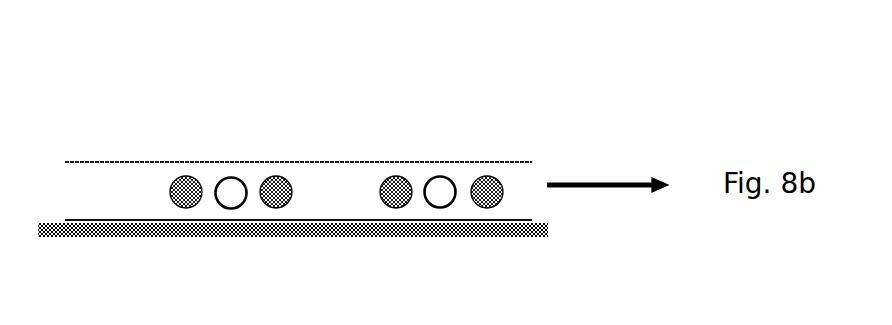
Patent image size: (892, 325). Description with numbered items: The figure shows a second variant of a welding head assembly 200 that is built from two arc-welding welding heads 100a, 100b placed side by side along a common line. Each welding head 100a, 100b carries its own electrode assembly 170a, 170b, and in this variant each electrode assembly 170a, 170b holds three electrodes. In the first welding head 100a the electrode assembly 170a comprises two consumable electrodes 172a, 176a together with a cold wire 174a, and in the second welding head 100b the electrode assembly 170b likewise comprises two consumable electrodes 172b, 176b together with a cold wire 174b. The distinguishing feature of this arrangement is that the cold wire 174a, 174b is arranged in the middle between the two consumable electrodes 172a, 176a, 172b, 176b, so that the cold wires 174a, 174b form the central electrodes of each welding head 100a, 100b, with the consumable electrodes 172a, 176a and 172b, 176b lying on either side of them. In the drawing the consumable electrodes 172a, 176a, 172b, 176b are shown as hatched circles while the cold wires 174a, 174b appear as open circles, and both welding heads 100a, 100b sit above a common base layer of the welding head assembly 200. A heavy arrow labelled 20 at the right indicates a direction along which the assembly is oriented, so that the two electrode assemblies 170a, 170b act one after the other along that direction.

The arc-welding welding head 100a is at (171, 148).
The arc-welding welding head 100b is at (364, 147).
The welding head assembly 200 is at (503, 122).
The electrode assembly 170a is at (142, 192).
The electrode assembly 170b is at (558, 223).
The consumable electrode 172a is at (181, 207).
The consumable electrode 172b is at (396, 208).
The cold wire 174a is at (225, 209).
The cold wire 174b is at (437, 176).
The consumable electrode 176a is at (283, 206).
The consumable electrode 176b is at (487, 208).
The flow direction 20 is at (590, 182).